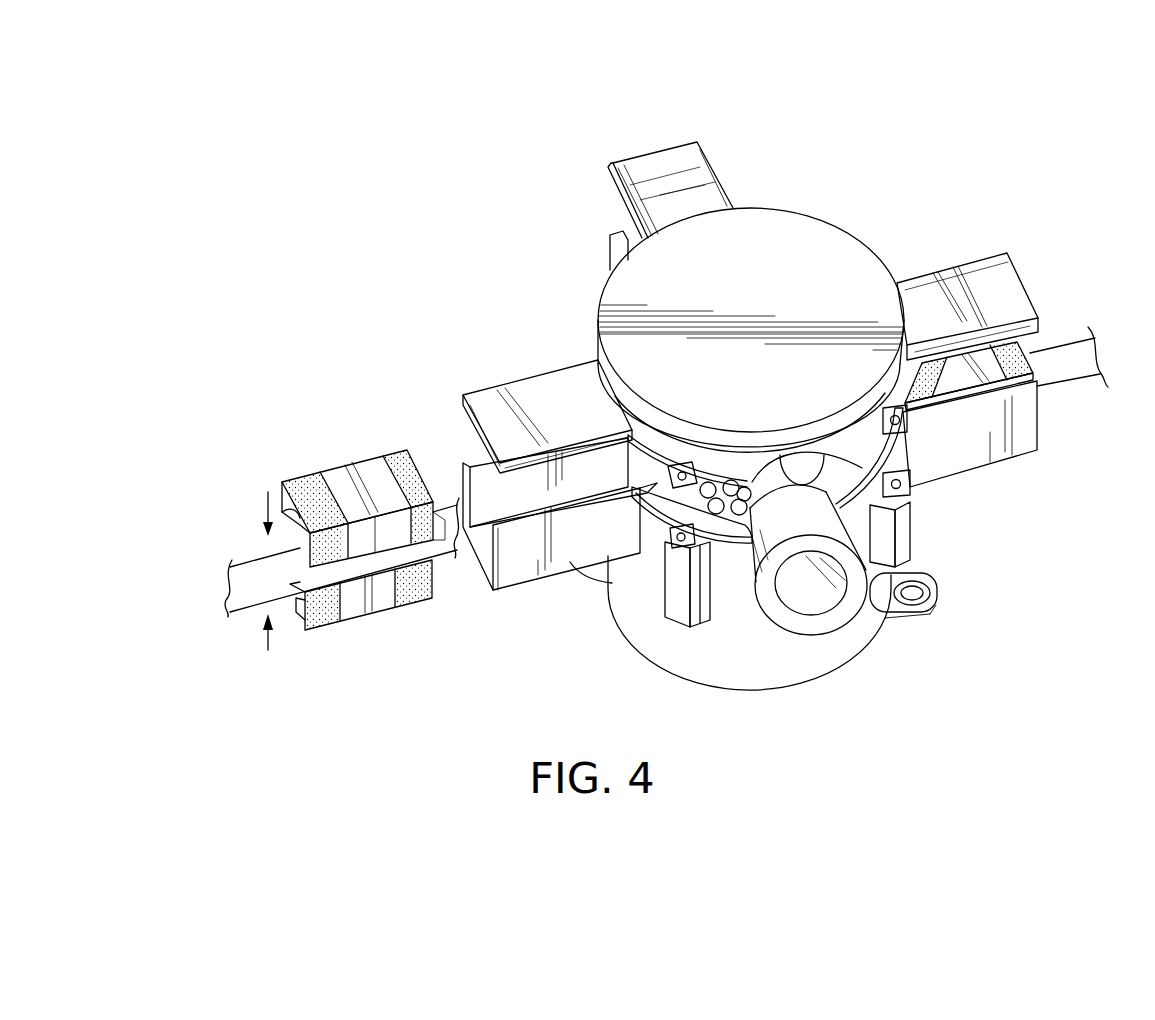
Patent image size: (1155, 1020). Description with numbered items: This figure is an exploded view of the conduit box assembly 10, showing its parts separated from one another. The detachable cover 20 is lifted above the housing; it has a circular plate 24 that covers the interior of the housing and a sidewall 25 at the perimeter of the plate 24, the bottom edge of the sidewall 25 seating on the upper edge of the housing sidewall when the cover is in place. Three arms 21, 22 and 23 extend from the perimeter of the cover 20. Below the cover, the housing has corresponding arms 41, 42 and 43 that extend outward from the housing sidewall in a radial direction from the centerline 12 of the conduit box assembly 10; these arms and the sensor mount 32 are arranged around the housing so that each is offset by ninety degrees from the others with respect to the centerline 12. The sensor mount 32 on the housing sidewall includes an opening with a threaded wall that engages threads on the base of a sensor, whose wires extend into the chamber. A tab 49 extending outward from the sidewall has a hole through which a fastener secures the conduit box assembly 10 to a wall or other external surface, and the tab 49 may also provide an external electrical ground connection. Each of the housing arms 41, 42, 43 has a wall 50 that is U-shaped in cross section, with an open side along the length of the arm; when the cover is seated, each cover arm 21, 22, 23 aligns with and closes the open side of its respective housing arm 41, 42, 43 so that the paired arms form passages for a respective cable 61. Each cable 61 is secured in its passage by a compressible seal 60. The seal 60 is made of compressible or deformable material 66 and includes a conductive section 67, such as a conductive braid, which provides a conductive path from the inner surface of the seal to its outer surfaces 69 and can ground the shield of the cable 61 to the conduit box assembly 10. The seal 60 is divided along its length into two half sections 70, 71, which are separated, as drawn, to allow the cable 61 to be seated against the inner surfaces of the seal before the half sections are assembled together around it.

The conduit box assembly 10 is at (562, 207).
The centerline 12 is at (238, 600).
The detachable cover 20 is at (777, 240).
The arm 21 is at (927, 287).
The arm 22 is at (670, 165).
The arm 23 is at (550, 385).
The circular plate 24 is at (711, 287).
The sidewall 25 is at (708, 460).
The sensor mount 32 is at (812, 595).
The arm 41 is at (1012, 433).
The arm 42 is at (730, 664).
The arm 43 is at (522, 562).
The tab 49 is at (937, 597).
The wall 50 is at (488, 538).
The compressible seal 60 is at (636, 476).
The cable 61 is at (440, 517).
The compressible or deformable material 66 is at (410, 594).
The conductive section 67 is at (364, 607).
The outer surfaces 69 is at (370, 455).
The half section 70 is at (304, 608).
The half section 71 is at (286, 500).